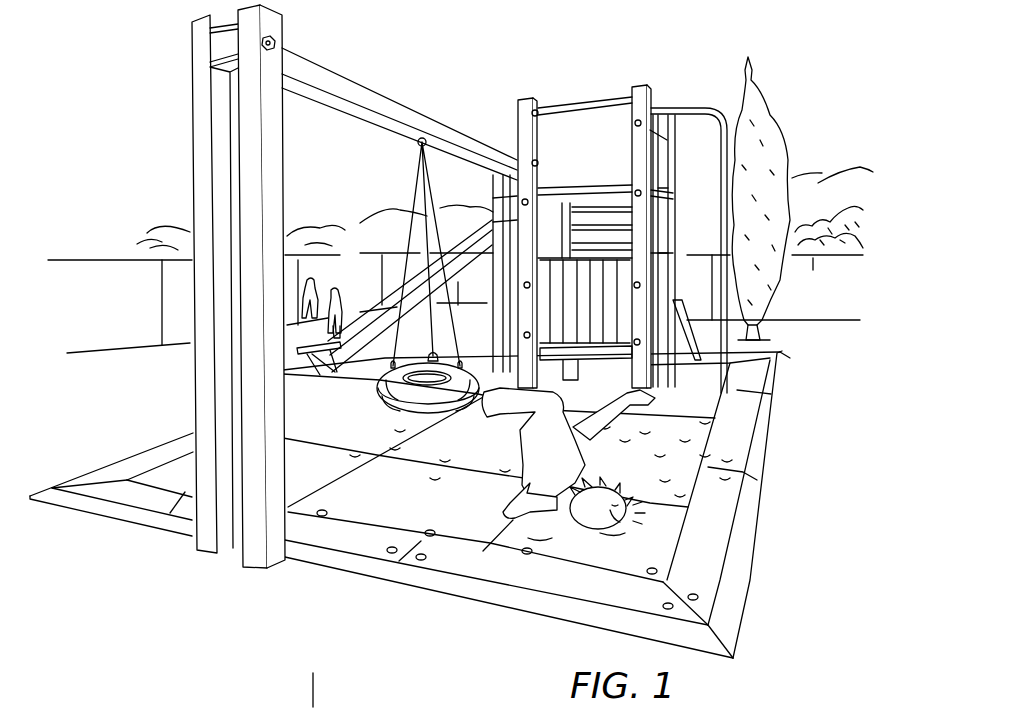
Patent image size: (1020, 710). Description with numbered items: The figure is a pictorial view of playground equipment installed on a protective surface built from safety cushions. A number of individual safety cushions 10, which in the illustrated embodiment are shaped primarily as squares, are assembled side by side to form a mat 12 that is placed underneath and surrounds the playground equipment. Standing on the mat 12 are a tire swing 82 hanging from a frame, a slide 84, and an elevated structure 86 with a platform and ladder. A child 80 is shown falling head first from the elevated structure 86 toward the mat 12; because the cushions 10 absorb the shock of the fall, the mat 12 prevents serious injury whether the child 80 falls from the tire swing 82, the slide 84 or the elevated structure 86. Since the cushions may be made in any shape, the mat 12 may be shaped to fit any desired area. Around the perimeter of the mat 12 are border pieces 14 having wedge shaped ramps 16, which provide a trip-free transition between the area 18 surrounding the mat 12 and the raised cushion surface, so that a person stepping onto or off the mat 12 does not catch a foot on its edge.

The safety cushion 10 is at (336, 438).
The mat 12 is at (318, 584).
The border pieces 14 is at (750, 439).
The wedge shaped ramps 16 is at (763, 422).
The area surrounding the mat 18 is at (811, 492).
The child 80 is at (520, 490).
The tire swing 82 is at (387, 398).
The slide 84 is at (397, 328).
The elevated structure 86 is at (670, 365).